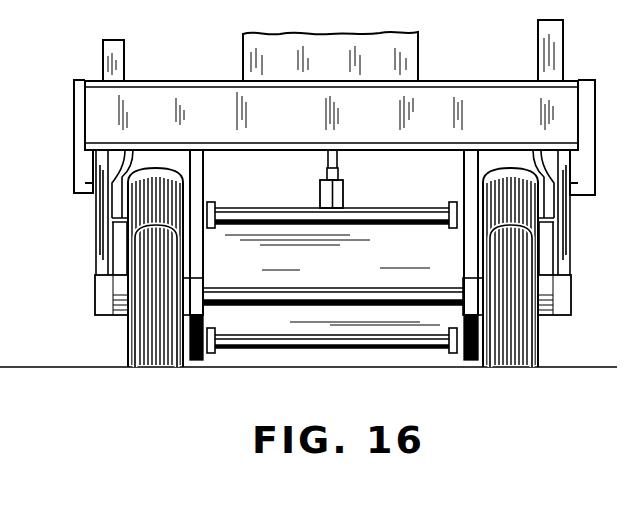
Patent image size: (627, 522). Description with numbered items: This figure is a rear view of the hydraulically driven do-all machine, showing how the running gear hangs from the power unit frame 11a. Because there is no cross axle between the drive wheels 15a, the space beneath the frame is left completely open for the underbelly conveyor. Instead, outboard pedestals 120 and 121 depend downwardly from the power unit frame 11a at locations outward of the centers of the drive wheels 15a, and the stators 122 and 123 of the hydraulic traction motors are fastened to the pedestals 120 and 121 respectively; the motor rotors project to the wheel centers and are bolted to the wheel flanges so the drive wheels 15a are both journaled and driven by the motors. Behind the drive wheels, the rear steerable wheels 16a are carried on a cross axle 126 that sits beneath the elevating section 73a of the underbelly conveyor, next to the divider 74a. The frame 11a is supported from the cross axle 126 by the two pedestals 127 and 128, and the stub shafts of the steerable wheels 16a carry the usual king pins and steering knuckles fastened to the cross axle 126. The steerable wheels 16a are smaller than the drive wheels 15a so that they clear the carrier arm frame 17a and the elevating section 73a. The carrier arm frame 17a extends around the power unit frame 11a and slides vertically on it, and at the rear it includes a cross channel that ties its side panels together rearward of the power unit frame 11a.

The power unit frame 11a is at (118, 50).
The carrier arm frame 17a is at (190, 97).
The pedestal 127 is at (195, 163).
The pedestal 128 is at (468, 168).
The divider 74a is at (320, 184).
The elevating section 73a is at (427, 212).
The cross axle 126 is at (278, 267).
The outboard pedestal 121 is at (103, 262).
The stator 123 is at (118, 280).
The outboard pedestal 120 is at (567, 260).
The stator 122 is at (548, 283).
The rear steerable wheel 16a is at (155, 367).
The drive wheel 15a is at (198, 353).